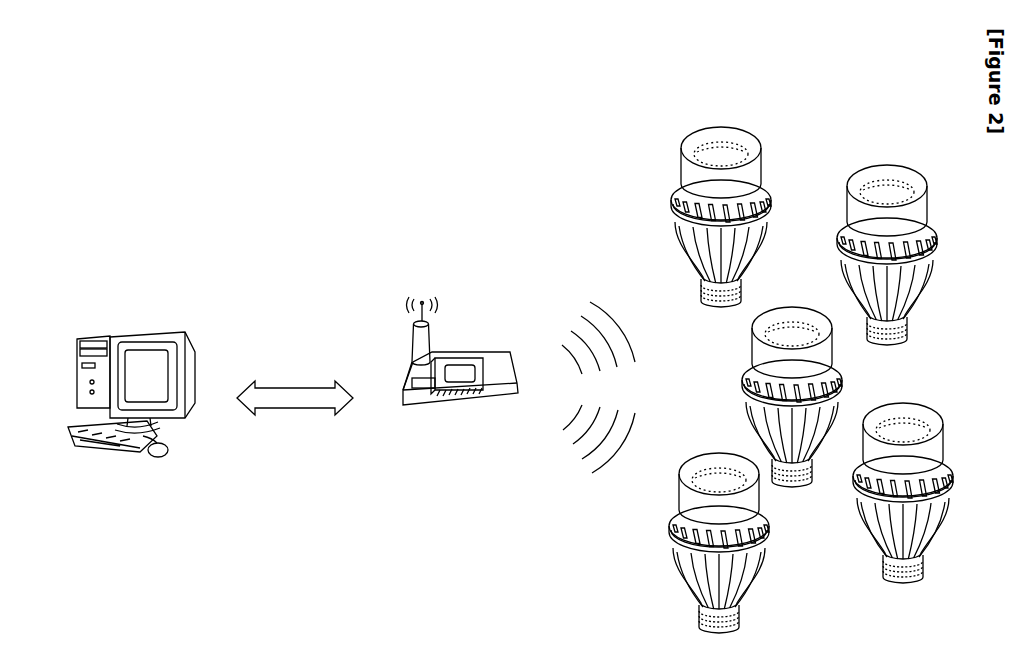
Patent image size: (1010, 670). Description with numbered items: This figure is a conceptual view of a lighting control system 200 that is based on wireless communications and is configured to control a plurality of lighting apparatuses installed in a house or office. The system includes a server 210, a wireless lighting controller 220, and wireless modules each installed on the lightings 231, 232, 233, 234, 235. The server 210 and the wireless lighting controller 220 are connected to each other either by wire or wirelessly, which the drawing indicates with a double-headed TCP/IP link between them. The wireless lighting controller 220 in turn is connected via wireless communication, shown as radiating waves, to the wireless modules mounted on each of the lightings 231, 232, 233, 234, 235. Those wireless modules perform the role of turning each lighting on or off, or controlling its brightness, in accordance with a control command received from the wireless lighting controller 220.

The lighting control system 200 is at (504, 188).
The server 210 is at (118, 449).
The wireless lighting controller 220 is at (470, 408).
The lighting 231 is at (748, 133).
The lighting 232 is at (920, 175).
The lighting 233 is at (800, 303).
The lighting 234 is at (938, 404).
The lighting 235 is at (770, 526).